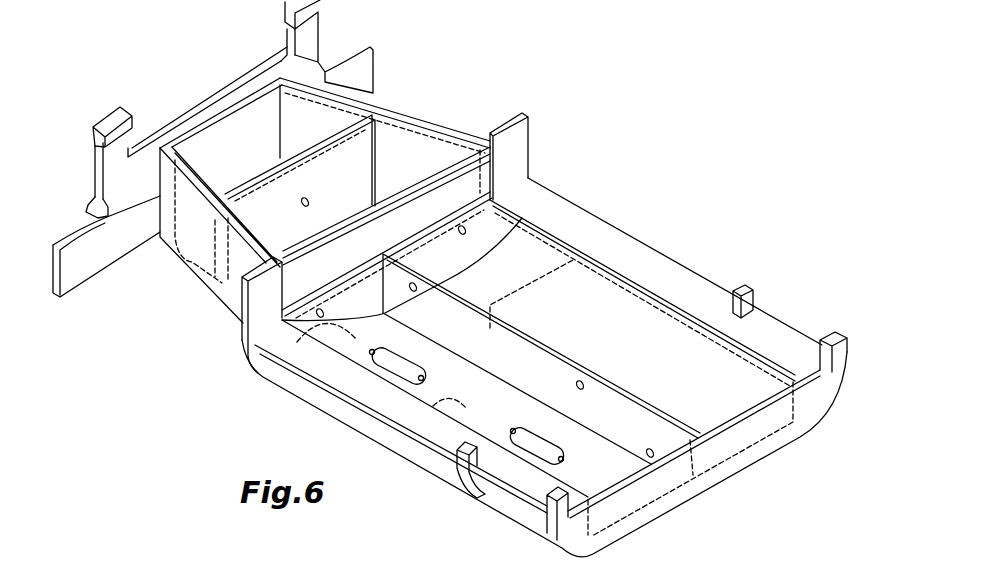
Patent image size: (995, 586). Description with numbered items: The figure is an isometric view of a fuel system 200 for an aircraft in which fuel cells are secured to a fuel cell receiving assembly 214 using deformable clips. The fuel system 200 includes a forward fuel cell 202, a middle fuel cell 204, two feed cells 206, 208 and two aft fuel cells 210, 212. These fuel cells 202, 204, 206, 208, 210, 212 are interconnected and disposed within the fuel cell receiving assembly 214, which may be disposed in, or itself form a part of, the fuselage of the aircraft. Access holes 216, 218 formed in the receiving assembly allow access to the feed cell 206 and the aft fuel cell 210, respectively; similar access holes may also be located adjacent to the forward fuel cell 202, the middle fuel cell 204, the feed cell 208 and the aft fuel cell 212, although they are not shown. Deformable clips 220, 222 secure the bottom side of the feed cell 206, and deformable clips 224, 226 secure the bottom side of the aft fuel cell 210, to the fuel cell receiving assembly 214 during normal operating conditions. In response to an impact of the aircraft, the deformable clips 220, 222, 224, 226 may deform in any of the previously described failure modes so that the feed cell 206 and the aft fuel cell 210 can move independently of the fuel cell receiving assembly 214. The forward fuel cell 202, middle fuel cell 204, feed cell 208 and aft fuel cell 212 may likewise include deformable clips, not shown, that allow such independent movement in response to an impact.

The fuel system 200 is at (620, 124).
The forward fuel cell 202 is at (245, 138).
The middle fuel cell 204 is at (408, 156).
The feed cell 206 is at (250, 356).
The feed cell 208 is at (542, 247).
The aft fuel cell 210 is at (383, 378).
The aft fuel cell 212 is at (662, 324).
The fuel cell receiving assembly 214 is at (641, 260).
The access hole 216 is at (400, 354).
The access hole 218 is at (540, 430).
The deformable clip 220 is at (362, 417).
The deformable clip 222 is at (378, 373).
The deformable clip 224 is at (490, 506).
The deformable clip 226 is at (518, 452).